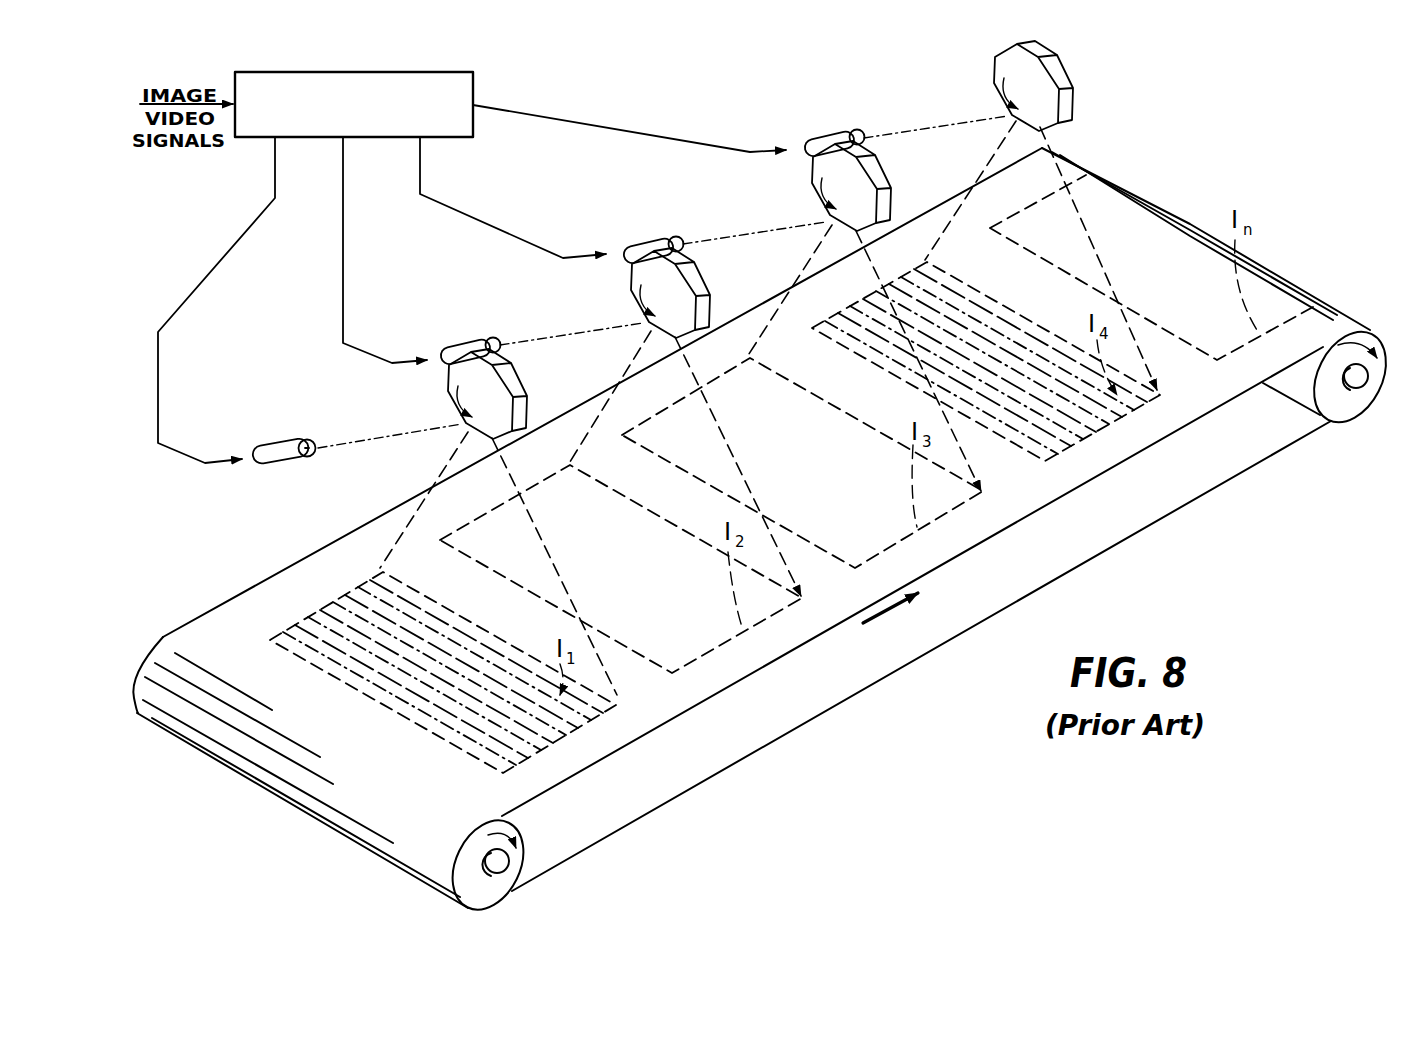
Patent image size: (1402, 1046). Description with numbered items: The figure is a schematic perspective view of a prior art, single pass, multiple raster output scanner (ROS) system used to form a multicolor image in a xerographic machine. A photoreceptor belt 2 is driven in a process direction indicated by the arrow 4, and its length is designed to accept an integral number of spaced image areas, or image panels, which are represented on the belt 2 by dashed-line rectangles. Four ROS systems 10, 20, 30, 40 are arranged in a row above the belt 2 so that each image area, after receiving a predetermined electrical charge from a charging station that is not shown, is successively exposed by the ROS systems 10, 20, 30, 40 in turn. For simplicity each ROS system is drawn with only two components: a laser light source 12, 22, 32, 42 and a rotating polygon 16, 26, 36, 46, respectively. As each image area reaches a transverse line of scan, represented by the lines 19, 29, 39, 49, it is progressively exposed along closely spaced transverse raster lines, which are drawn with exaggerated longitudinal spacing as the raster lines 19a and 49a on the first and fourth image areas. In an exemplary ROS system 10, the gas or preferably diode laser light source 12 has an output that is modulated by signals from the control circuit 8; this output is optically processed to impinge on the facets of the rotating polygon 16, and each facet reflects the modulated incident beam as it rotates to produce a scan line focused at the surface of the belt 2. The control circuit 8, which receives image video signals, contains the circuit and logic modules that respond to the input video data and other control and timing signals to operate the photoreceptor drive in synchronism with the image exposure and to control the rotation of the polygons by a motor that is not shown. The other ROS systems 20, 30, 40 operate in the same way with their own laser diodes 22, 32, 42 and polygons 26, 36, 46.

The photoreceptor belt 2 is at (1097, 480).
The arrow 4 is at (890, 612).
The control circuit 8 is at (462, 85).
The ROS system 10 is at (342, 388).
The laser light source 12 is at (278, 447).
The rotating polygon 16 is at (460, 340).
The line of scan 19 is at (510, 645).
The transverse raster lines 19a is at (486, 737).
The ROS system 20 is at (540, 283).
The laser light source 22 is at (478, 340).
The rotating polygon 26 is at (643, 250).
The line of scan 29 is at (683, 530).
The ROS system 30 is at (742, 200).
The laser light source 32 is at (660, 240).
The rotating polygon 36 is at (828, 150).
The line of scan 39 is at (873, 430).
The ROS system 40 is at (945, 90).
The laser light source 42 is at (838, 138).
The rotating polygon 46 is at (1034, 45).
The line of scan 49 is at (1060, 333).
The transverse raster lines 49a is at (1028, 428).